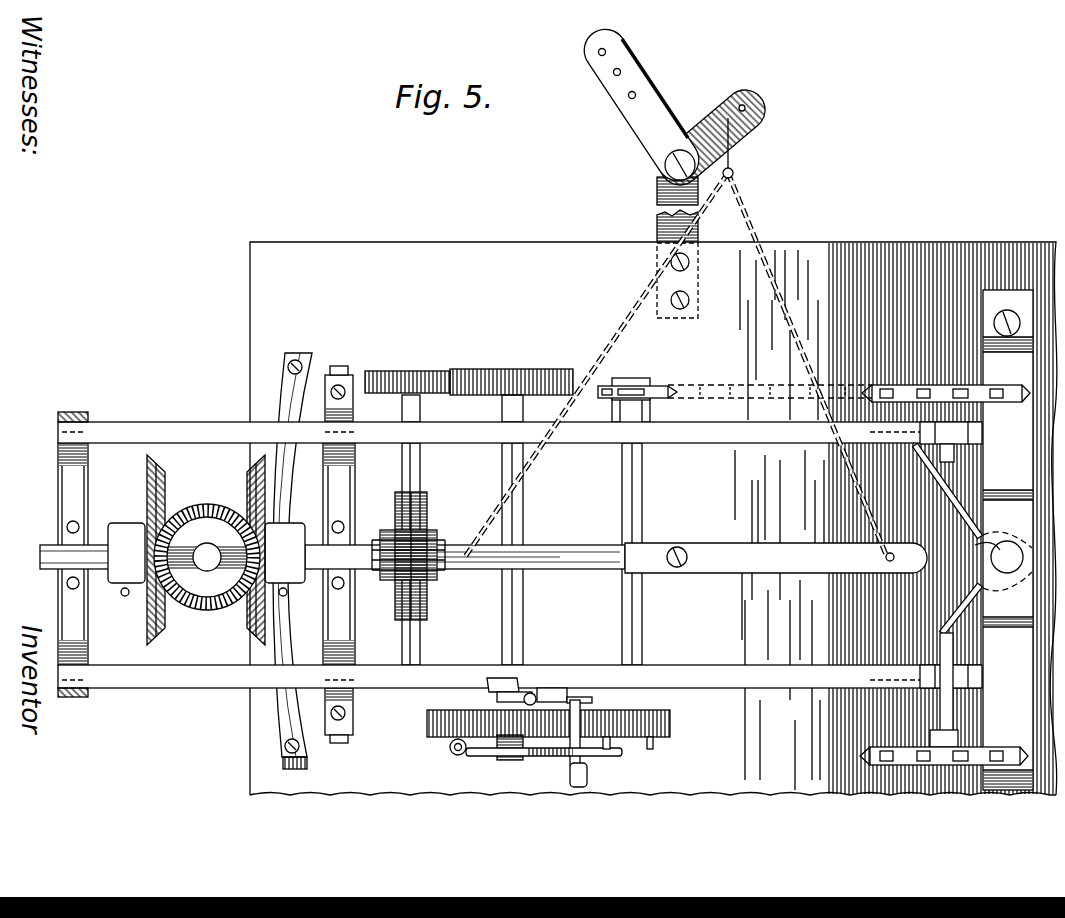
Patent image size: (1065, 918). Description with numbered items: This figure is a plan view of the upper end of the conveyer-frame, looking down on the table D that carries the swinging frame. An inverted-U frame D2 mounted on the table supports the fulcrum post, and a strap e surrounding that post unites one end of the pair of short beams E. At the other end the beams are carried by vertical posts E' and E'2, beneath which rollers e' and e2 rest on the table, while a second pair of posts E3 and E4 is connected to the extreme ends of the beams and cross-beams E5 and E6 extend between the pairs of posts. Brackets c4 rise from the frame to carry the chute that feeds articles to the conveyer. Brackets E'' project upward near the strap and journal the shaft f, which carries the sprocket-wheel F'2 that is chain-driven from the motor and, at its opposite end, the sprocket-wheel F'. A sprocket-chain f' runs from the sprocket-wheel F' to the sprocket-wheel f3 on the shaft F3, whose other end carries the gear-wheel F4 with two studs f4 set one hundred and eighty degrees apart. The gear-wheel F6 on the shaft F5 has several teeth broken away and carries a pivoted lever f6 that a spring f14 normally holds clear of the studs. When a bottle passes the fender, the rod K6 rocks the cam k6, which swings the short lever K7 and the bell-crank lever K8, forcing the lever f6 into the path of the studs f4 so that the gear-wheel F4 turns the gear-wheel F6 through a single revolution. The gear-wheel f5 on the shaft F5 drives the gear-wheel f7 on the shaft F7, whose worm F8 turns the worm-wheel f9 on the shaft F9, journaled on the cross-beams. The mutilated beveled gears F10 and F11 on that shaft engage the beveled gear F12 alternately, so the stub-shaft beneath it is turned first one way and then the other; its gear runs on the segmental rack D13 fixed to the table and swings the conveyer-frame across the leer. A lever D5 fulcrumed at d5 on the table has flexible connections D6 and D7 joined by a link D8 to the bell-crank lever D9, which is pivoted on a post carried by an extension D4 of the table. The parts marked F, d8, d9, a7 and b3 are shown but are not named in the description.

The table D is at (462, 242).
The frame D2 is at (960, 470).
The extension of the table D4 is at (657, 190).
The lever D5 is at (722, 545).
The flexible connection D6 is at (628, 318).
The flexible connection D7 is at (706, 303).
The link D8 is at (732, 160).
The bell-crank lever D9 is at (630, 107).
The segmental rack D13 is at (273, 650).
The fulcrum d5 is at (682, 568).
The hole d8 is at (761, 106).
The pivot screw d9 is at (664, 167).
The pin a7 is at (886, 557).
The link b3 is at (975, 545).
The bracket c4 is at (1001, 500).
The strap e is at (972, 553).
The roller e' is at (339, 357).
The roller e2 is at (342, 743).
The short beam E is at (519, 452).
The vertical post E' is at (281, 398).
The bracket E'' is at (966, 553).
The vertical post E'2 is at (275, 715).
The post E3 is at (76, 412).
The post E4 is at (80, 697).
The cross-beam E5 is at (328, 482).
The cross-beam E6 is at (60, 462).
The lower rail F is at (519, 662).
The sprocket-wheel F' is at (946, 378).
The sprocket-wheel F'2 is at (944, 742).
The shaft F3 is at (644, 495).
The gear-wheel F4 is at (672, 722).
The shaft F5 is at (524, 502).
The gear-wheel F6 is at (431, 737).
The shaft F7 is at (420, 473).
The worm F8 is at (433, 528).
The shaft F9 is at (93, 553).
The mutilated beveled gear F10 is at (160, 484).
The mutilated beveled gear F11 is at (248, 492).
The beveled gear F12 is at (207, 611).
The shaft f is at (963, 690).
The sprocket-chain f' is at (770, 376).
The sprocket-wheel f3 is at (628, 385).
The stud f4 is at (652, 752).
The gear-wheel f5 is at (484, 369).
The lever f6 is at (540, 757).
The gear-wheel f7 is at (405, 371).
The worm-wheel f9 is at (428, 601).
The spring f14 is at (500, 742).
The rod K6 is at (490, 693).
The short lever K7 is at (570, 700).
The bell-crank lever K8 is at (587, 772).
The cam k6 is at (570, 763).